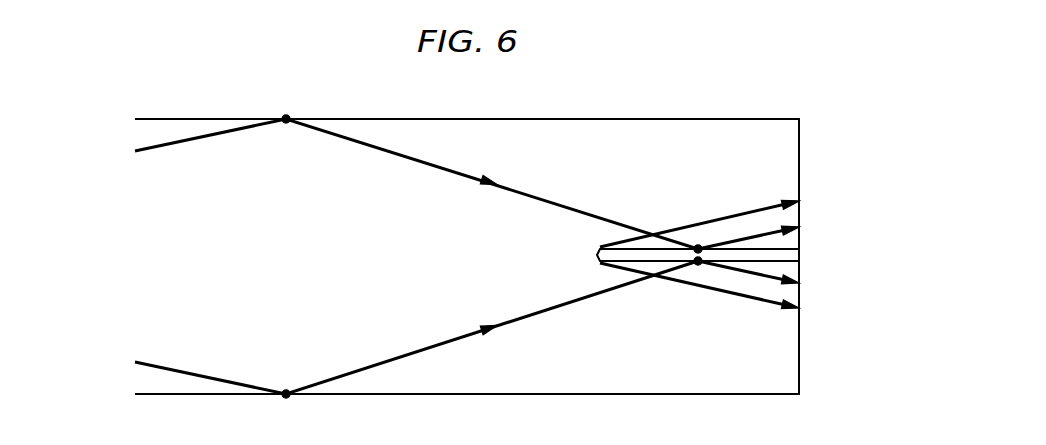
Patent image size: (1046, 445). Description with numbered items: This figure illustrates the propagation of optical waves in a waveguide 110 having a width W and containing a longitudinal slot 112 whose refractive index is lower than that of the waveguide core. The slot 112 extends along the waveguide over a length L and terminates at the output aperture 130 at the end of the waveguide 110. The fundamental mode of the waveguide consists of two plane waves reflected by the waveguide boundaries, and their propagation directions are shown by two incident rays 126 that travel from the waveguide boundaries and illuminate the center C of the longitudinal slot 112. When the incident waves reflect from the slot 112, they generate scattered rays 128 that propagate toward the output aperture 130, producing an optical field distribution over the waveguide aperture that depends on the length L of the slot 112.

The waveguide 110 is at (596, 394).
The longitudinal slot 112 is at (644, 249).
The incident rays 126 is at (530, 197).
The scattered rays 128 is at (725, 243).
The output aperture 130 is at (799, 146).
The center of longitudinal slot C is at (693, 276).
The width of waveguide W is at (120, 119).
The length of longitudinal slot L is at (799, 80).